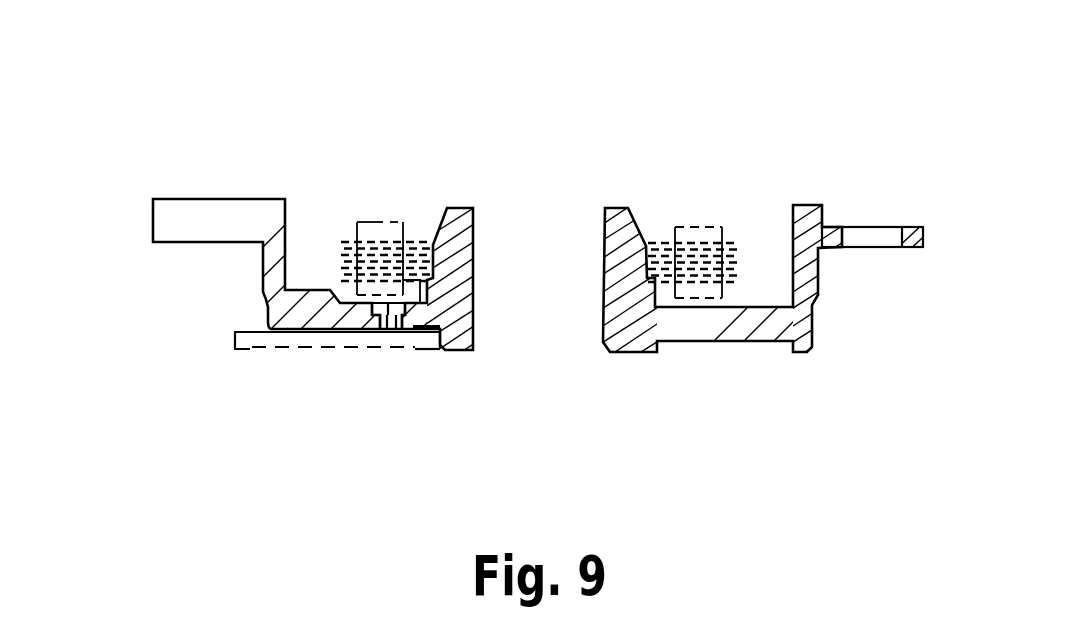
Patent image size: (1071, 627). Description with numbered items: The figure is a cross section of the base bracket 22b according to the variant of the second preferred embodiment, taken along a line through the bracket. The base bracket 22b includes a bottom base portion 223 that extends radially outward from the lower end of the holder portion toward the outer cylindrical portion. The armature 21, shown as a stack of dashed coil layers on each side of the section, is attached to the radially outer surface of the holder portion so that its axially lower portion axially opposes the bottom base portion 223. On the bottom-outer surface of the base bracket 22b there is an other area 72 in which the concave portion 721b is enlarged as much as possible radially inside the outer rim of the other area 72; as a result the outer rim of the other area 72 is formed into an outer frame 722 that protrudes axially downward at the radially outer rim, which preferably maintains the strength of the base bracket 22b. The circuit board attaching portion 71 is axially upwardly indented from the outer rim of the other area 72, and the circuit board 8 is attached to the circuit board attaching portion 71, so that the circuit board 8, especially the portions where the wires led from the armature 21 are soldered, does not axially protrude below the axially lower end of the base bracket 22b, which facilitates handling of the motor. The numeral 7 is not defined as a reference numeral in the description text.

The base bracket 22b is at (178, 159).
The armature 21 is at (381, 222).
The circuit board attaching portion 71 is at (355, 333).
The circuit board 8 is at (322, 345).
The holder 7 is at (765, 376).
The other area 72 is at (633, 355).
The concave portion 721b is at (740, 352).
The outer frame 722 is at (798, 352).
The bottom base portion 223 is at (758, 323).